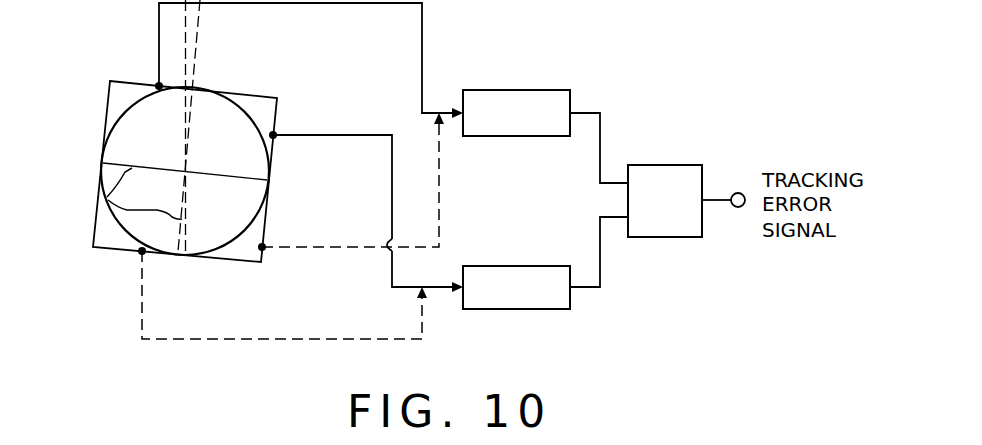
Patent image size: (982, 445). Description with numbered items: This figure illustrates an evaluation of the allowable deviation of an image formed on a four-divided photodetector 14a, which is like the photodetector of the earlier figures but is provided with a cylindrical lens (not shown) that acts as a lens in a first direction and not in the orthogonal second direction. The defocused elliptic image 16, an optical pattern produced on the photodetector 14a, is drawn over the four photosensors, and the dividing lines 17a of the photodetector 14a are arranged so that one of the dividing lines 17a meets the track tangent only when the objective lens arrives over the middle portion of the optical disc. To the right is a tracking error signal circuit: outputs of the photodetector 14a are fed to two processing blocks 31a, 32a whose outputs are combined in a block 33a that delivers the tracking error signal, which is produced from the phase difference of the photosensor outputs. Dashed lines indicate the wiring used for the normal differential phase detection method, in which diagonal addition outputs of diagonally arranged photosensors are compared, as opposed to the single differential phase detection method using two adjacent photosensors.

The four-divided photodetector 14a is at (104, 268).
The elliptic image 16 is at (233, 240).
The dividing lines 17a is at (110, 198).
The first signal processing circuit 31a is at (506, 98).
The second signal processing circuit 32a is at (515, 272).
The differential amplifier 33a is at (663, 172).